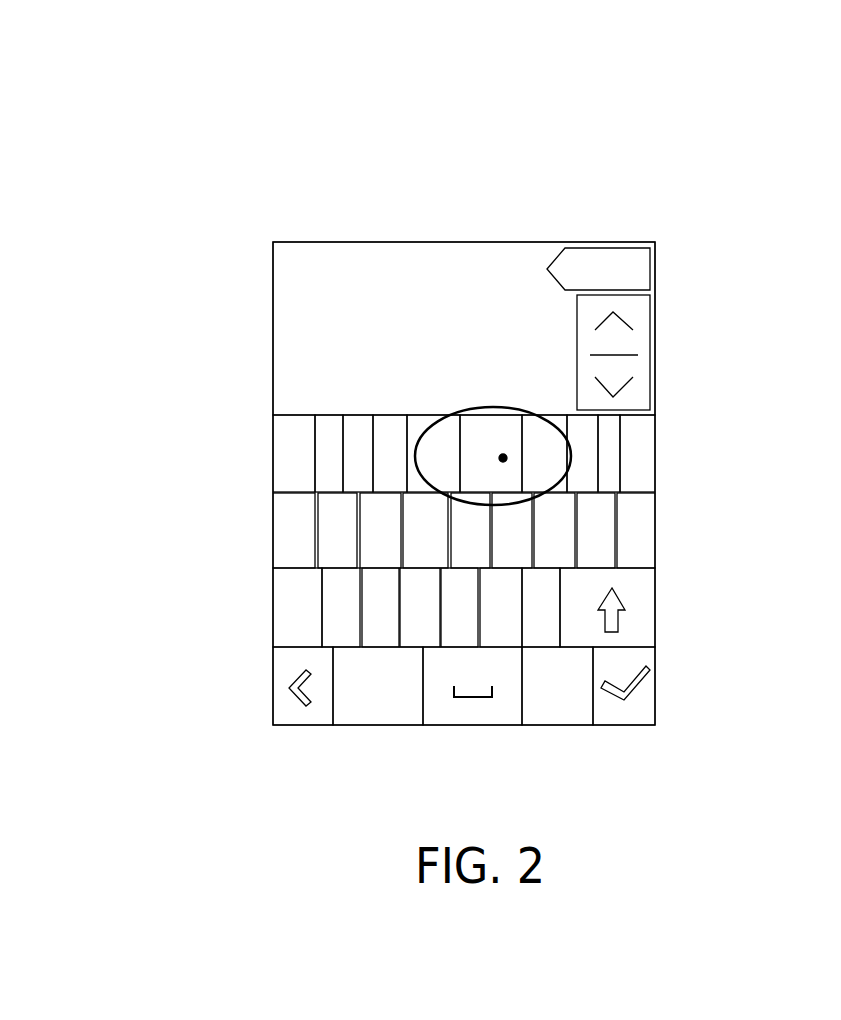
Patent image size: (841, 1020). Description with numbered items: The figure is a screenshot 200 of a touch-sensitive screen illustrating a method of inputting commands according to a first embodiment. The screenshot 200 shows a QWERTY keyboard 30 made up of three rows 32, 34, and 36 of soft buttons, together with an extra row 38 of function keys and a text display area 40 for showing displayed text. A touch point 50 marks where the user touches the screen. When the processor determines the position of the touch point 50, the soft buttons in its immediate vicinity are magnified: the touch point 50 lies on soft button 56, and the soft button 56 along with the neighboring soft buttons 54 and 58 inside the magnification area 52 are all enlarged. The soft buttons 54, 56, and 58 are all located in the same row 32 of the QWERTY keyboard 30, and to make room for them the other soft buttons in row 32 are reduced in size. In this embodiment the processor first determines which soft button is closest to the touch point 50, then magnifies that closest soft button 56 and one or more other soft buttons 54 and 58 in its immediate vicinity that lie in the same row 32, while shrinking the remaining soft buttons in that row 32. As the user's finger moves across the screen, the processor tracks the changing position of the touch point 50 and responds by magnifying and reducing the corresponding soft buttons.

The screenshot 200 is at (703, 122).
The text display area 40 is at (413, 256).
The QWERTY keyboard 30 is at (170, 438).
The row 32 is at (255, 457).
The row 34 is at (255, 528).
The row 36 is at (255, 605).
The extra row of function keys 38 is at (255, 683).
The touch point 50 is at (503, 458).
The magnification area 52 is at (505, 408).
The soft button 54 is at (440, 432).
The soft button 56 is at (505, 487).
The soft button 58 is at (547, 473).